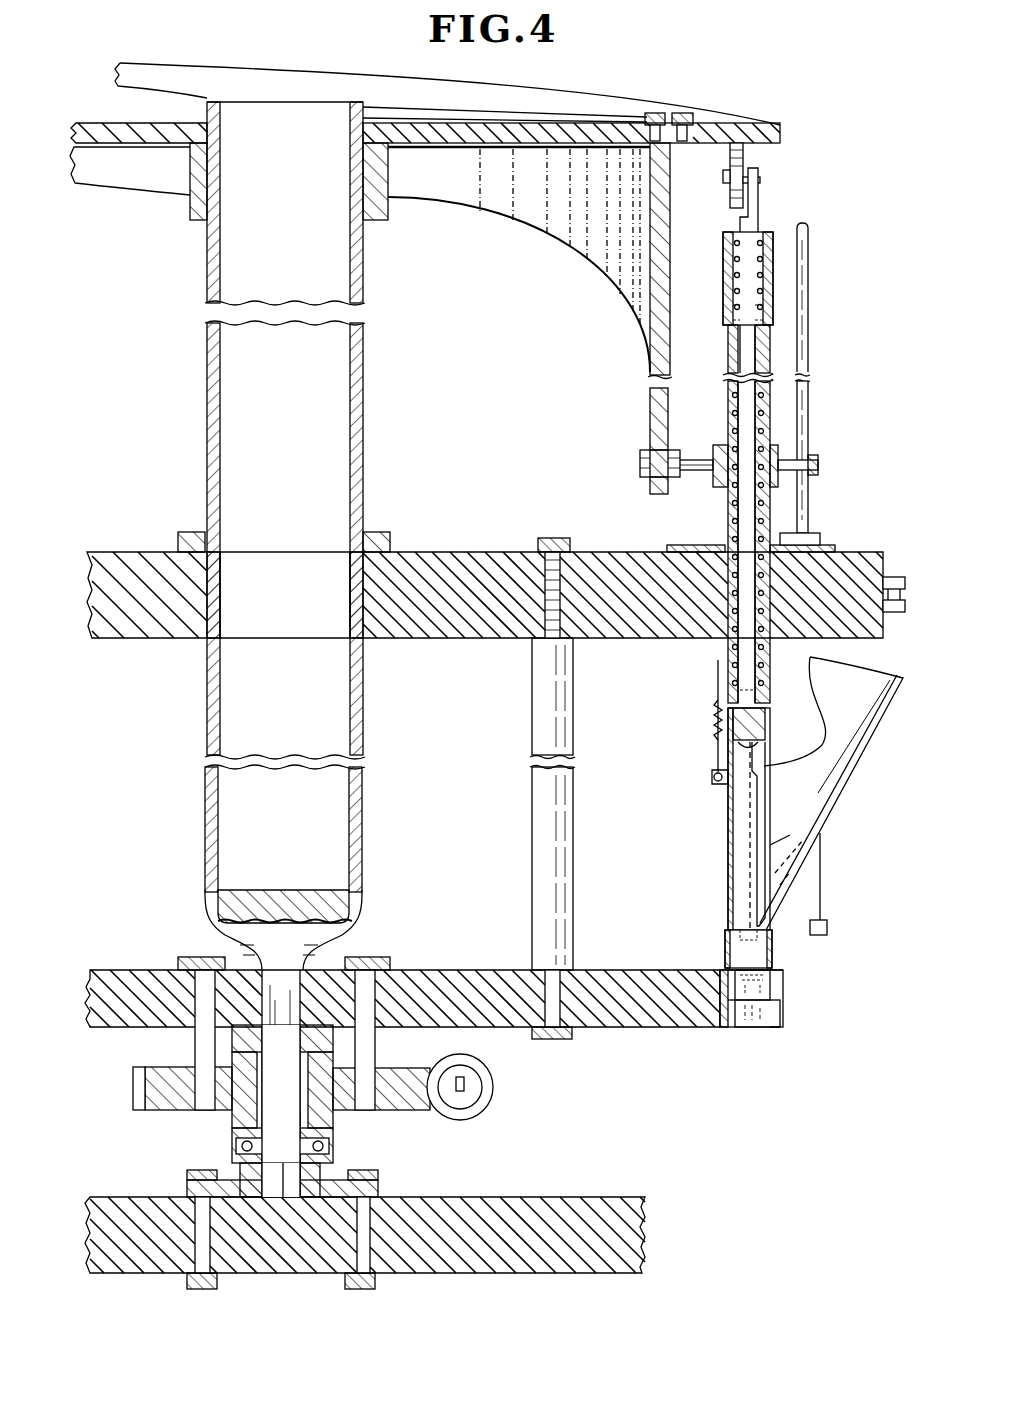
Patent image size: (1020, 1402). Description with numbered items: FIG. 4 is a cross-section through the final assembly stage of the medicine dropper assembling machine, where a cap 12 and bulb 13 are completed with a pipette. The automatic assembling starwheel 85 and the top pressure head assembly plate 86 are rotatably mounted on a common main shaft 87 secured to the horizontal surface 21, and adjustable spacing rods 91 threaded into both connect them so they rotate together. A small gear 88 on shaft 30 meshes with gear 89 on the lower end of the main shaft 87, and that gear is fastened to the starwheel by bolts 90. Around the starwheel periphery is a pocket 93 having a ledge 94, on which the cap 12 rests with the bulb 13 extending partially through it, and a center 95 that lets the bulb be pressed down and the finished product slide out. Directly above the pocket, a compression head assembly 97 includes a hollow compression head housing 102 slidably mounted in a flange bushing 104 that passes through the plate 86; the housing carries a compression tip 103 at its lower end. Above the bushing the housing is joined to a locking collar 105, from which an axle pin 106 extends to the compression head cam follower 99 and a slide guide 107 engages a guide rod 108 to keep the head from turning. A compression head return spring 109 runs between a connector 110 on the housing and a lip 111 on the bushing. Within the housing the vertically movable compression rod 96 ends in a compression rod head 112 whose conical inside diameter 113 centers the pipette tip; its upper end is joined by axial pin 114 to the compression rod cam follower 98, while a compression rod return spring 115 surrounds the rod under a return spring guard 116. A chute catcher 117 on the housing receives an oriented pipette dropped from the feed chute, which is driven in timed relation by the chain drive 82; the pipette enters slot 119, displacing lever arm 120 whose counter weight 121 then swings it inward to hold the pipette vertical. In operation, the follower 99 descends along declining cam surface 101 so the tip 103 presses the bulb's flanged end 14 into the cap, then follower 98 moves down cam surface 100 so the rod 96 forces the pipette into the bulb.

The cam surface 100 is at (778, 125).
The compression rod cam follower 98 is at (745, 155).
The axial pin 114 is at (760, 178).
The compression rod 96 is at (760, 203).
The return spring guard 116 is at (775, 235).
The guide rod 108 is at (809, 320).
The main shaft 87 is at (364, 372).
The declining cam surface 101 is at (690, 378).
The axle pin 106 is at (686, 458).
The compression head cam follower 99 is at (640, 460).
The slide guide 107 is at (818, 460).
The locking collar 105 is at (714, 482).
The flange bushing 104 is at (680, 545).
The compression rod return spring 115 is at (767, 527).
The chain drive 82 is at (893, 577).
The top pressure head assembly plate 86 is at (122, 552).
The adjustable spacing rods 91 is at (574, 704).
The lip 111 is at (728, 665).
The compression head return spring 109 is at (716, 710).
The compression rod head 112 is at (766, 722).
The inside diameter 113 is at (750, 743).
The chute catcher 117 is at (873, 735).
The connector 110 is at (712, 780).
The compression head assembly 97 is at (716, 812).
The slot 119 is at (764, 838).
The lever arm 120 is at (797, 863).
The compression head housing 102 is at (727, 868).
The counter weight 121 is at (827, 930).
The automatic assembling starwheel 85 is at (142, 970).
The bolts 90 is at (388, 967).
The compression tip 103 is at (724, 945).
The pocket 93 is at (783, 975).
The flanged end 14 is at (783, 975).
The cap 12 is at (772, 988).
The bulb 13 is at (763, 1007).
The ledge 94 is at (725, 1000).
The center 95 is at (777, 1027).
The small gear 88 is at (493, 1082).
The shaft 30 is at (474, 1106).
The gear 89 is at (330, 1122).
The horizontal surface 21 is at (648, 1212).